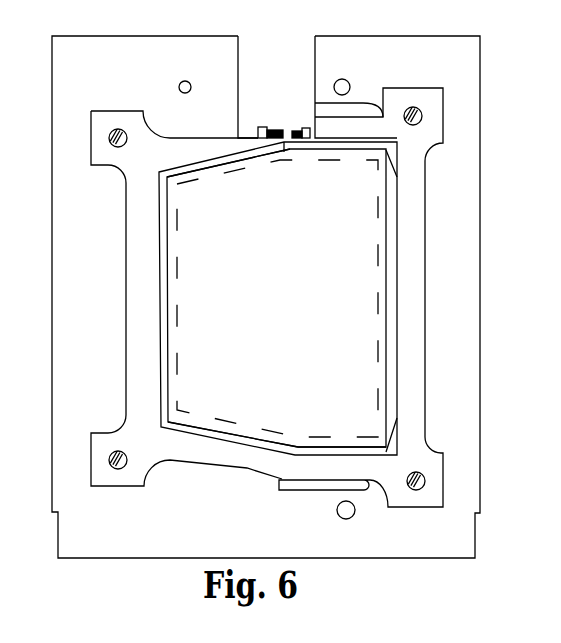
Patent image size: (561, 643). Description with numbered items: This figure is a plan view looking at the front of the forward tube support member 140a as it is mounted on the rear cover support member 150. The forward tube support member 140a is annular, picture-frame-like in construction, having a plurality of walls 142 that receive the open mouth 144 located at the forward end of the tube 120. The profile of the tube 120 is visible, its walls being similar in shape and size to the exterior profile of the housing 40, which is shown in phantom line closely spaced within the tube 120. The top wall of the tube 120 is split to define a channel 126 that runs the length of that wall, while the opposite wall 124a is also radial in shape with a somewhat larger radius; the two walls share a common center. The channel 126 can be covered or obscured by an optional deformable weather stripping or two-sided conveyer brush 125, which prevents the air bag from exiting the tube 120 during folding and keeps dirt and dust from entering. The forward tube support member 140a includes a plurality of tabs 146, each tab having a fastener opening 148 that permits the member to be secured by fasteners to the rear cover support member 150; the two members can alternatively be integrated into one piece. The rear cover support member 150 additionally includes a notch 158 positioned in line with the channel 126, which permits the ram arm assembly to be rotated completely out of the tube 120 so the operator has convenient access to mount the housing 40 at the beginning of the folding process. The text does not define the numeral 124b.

The rear cover support member 150 is at (112, 52).
The notch 158 is at (238, 53).
The forward tube support member 140a is at (118, 110).
The two-sided conveyer brush 125 is at (275, 127).
The channel 126 is at (292, 140).
The tube 120 is at (202, 170).
The opposite wall 124a is at (248, 428).
The upper edge portion 124b is at (252, 162).
The walls 142 is at (161, 291).
The open mouth 144 is at (177, 388).
The housing 40 is at (299, 426).
The tabs 146 is at (422, 468).
The fastener opening 148 is at (418, 490).